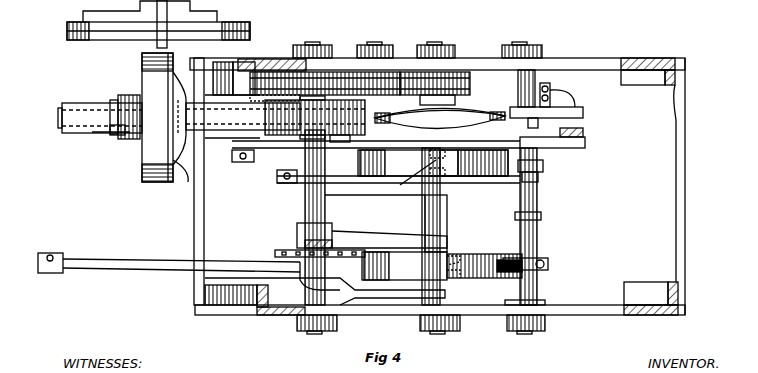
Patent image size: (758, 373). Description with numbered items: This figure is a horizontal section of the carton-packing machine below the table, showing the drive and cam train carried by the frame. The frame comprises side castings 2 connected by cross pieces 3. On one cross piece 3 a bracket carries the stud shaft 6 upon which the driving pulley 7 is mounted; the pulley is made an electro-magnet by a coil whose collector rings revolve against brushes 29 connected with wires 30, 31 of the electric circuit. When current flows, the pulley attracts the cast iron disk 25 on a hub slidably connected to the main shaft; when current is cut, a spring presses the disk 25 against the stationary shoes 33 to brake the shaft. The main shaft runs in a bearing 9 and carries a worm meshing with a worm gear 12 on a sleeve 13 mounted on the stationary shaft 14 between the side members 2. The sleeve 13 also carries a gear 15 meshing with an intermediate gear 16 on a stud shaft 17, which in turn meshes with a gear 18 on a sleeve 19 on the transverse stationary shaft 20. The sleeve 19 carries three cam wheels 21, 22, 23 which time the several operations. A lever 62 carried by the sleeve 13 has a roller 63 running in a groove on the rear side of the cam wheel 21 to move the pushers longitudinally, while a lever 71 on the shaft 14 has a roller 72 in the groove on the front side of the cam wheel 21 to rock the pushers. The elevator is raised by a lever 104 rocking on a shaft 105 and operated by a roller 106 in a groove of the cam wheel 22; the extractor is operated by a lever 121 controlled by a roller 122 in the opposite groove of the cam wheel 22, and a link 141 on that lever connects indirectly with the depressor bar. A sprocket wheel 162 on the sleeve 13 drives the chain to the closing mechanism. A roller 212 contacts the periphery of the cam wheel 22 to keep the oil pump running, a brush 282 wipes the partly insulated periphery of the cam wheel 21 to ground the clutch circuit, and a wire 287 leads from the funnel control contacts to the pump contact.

The side castings 2 is at (594, 56).
The cross pieces 3 is at (194, 220).
The stud shaft 6 is at (58, 118).
The driving pulley 7 is at (164, 117).
The bearing 9 is at (275, 116).
The worm gear 12 is at (288, 138).
The sleeve 13 is at (305, 207).
The stationary shaft 14 is at (312, 42).
The gear 15 is at (282, 58).
The intermediate gear 16 is at (395, 70).
The stud shaft 17 is at (374, 42).
The gear 18 is at (470, 84).
The sleeve 19 is at (435, 226).
The transverse stationary shaft 20 is at (432, 42).
The cam wheel 21 is at (404, 266).
The cam wheel 22 is at (376, 162).
The cam wheel 23 is at (440, 118).
The cast iron disk 25 is at (158, 29).
The brushes 29 is at (115, 99).
The wire 30 is at (103, 136).
The wire 31 is at (110, 100).
The stationary shoes 33 is at (186, 182).
The lever 62 is at (372, 221).
The roller 63 is at (453, 256).
The lever 71 is at (186, 272).
The roller 72 is at (455, 276).
The lever 104 is at (290, 186).
The shaft 105 is at (538, 240).
The roller 106 is at (421, 184).
The lever 121 is at (302, 142).
The roller 122 is at (410, 181).
The link 141 is at (575, 140).
The sprocket wheel 162 is at (286, 256).
The roller 212 is at (545, 168).
The brush 282 is at (530, 262).
The wire 287 is at (555, 86).